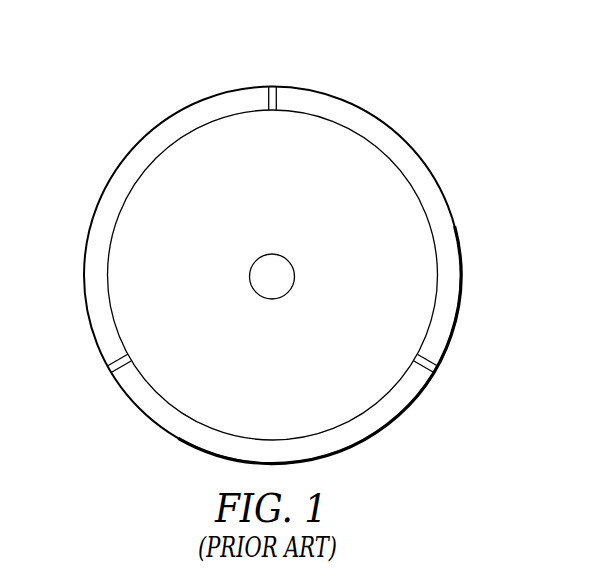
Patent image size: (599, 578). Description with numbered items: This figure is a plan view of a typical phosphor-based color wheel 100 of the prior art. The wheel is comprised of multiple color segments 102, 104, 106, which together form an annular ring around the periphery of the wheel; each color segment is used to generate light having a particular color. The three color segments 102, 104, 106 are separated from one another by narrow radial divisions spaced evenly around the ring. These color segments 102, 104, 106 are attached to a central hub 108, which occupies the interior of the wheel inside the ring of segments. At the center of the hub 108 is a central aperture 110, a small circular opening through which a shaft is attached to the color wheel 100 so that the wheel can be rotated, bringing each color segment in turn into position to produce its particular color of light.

The phosphor-based color wheel 100 is at (388, 65).
The color segment 102 is at (117, 183).
The color segment 104 is at (428, 187).
The color segment 106 is at (378, 420).
The central hub 108 is at (425, 265).
The central aperture 110 is at (273, 260).